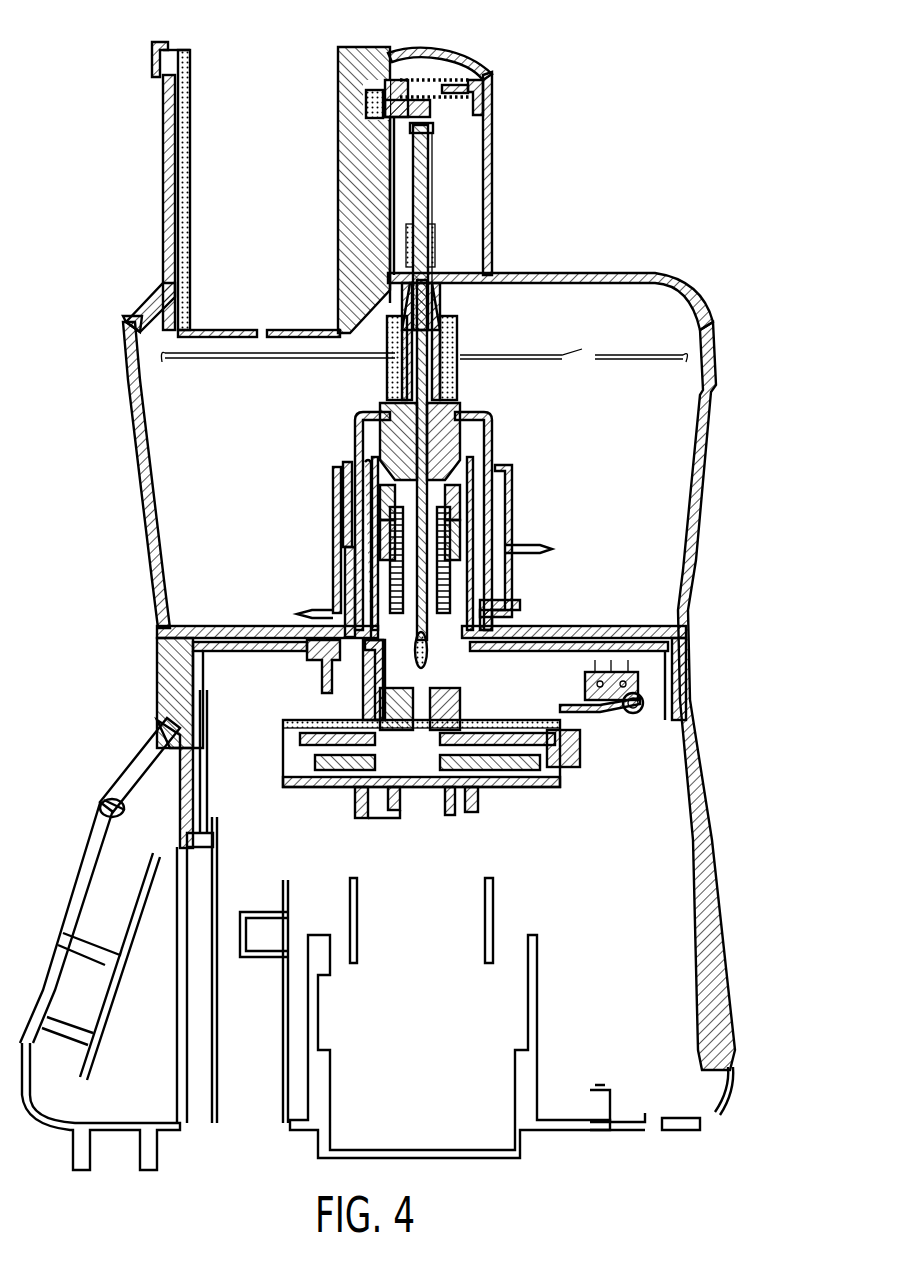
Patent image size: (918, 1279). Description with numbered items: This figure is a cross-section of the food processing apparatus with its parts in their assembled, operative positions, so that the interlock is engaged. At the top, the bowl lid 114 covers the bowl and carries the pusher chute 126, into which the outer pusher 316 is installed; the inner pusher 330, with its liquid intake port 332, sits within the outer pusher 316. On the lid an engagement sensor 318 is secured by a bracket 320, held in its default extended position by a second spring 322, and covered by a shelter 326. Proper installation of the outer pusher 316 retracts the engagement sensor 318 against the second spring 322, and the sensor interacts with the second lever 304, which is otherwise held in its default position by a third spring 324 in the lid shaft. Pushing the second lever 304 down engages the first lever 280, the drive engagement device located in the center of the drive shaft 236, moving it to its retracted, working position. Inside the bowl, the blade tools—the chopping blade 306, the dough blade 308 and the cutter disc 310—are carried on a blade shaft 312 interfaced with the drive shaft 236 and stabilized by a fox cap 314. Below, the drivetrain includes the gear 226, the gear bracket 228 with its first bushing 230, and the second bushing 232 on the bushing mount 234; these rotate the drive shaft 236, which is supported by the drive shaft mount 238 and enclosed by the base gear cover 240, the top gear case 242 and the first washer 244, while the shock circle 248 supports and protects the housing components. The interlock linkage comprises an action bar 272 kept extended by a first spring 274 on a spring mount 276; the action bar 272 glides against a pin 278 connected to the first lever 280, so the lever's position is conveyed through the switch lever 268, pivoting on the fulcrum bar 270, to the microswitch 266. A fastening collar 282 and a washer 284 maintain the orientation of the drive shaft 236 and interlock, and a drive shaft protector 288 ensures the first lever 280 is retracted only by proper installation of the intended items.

The bowl lid 114 is at (690, 287).
The pusher chute 126 is at (163, 180).
The gear 226 is at (530, 795).
The gear bracket 228 is at (540, 790).
The first bushing 230 is at (100, 805).
The second bushing 232 is at (370, 527).
The bushing mount 234 is at (365, 562).
The drive shaft 236 is at (478, 490).
The drive shaft mount 238 is at (485, 632).
The base gear cover 240 is at (277, 773).
The top gear case 242 is at (240, 735).
The first washer 244 is at (360, 487).
The shock circle 248 is at (162, 720).
The microswitch 266 is at (650, 705).
The switch lever 268 is at (630, 702).
The fulcrum bar 270 is at (640, 690).
The action bar 272 is at (660, 652).
The first spring 274 is at (300, 640).
The spring mount 276 is at (325, 670).
The pin 278 is at (360, 606).
The first lever 280 is at (430, 388).
The fastening collar 282 is at (380, 693).
The washer 284 is at (370, 462).
The drive shaft protector 288 is at (452, 318).
The second lever 304 is at (430, 182).
The chopping blade 306 is at (335, 587).
The dough blade 308 is at (333, 503).
The cutter disc 310 is at (705, 358).
The blade shaft 312 is at (490, 436).
The fox cap 314 is at (435, 268).
The outer pusher 316 is at (150, 58).
The engagement sensor 318 is at (410, 78).
The bracket 320 is at (475, 97).
The second spring 322 is at (440, 78).
The third spring 324 is at (435, 237).
The shelter 326 is at (490, 80).
The inner pusher 330 is at (180, 47).
The liquid intake port 332 is at (262, 330).